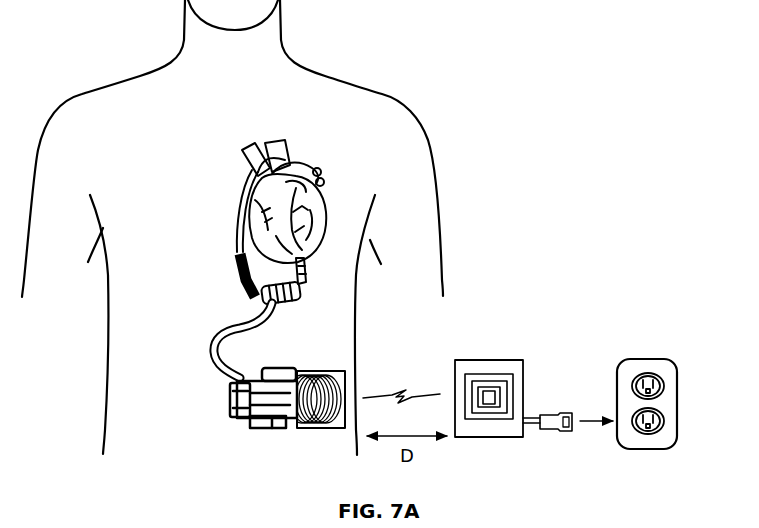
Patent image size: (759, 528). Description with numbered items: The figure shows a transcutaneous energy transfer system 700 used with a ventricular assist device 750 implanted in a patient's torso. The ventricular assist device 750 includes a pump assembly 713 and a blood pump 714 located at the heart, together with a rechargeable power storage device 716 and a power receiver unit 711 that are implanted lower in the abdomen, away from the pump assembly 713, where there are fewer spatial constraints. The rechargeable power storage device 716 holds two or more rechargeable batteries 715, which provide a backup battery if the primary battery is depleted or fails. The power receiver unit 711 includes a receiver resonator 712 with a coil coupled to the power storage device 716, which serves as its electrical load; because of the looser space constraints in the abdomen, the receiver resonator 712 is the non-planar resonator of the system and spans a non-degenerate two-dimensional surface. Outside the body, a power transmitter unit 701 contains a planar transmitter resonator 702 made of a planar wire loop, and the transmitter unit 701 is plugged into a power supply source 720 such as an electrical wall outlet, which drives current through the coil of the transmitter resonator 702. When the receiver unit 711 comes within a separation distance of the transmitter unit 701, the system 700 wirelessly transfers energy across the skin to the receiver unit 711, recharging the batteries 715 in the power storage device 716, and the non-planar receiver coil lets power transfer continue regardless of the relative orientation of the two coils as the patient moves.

The transcutaneous energy transfer system 700 is at (500, 142).
The ventricular assist device 750 is at (212, 296).
The pump assembly 713 is at (233, 266).
The blood pump 714 is at (300, 305).
The receiver resonator 712 is at (336, 381).
The power receiver unit 711 is at (320, 425).
The rechargeable batteries 715 is at (230, 388).
The rechargeable power storage device 716 is at (250, 428).
The power transmitter unit 701 is at (513, 353).
The transmitter resonator 702 is at (483, 366).
The power supply source 720 is at (650, 358).